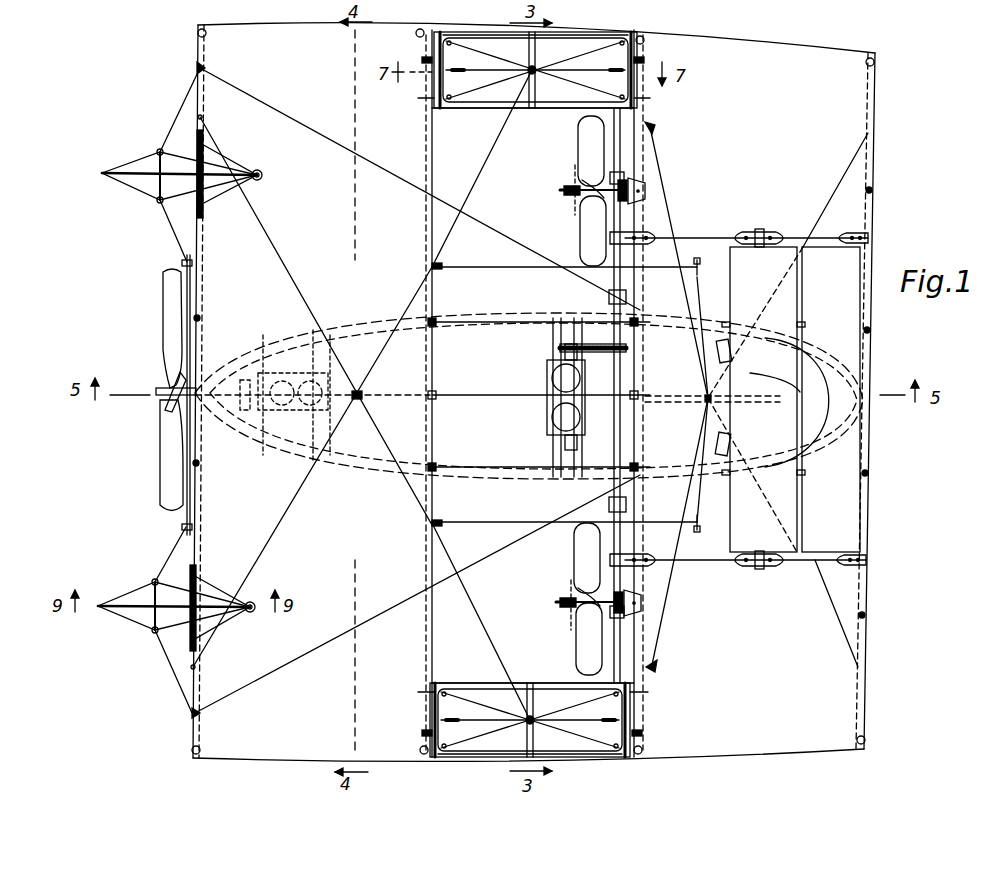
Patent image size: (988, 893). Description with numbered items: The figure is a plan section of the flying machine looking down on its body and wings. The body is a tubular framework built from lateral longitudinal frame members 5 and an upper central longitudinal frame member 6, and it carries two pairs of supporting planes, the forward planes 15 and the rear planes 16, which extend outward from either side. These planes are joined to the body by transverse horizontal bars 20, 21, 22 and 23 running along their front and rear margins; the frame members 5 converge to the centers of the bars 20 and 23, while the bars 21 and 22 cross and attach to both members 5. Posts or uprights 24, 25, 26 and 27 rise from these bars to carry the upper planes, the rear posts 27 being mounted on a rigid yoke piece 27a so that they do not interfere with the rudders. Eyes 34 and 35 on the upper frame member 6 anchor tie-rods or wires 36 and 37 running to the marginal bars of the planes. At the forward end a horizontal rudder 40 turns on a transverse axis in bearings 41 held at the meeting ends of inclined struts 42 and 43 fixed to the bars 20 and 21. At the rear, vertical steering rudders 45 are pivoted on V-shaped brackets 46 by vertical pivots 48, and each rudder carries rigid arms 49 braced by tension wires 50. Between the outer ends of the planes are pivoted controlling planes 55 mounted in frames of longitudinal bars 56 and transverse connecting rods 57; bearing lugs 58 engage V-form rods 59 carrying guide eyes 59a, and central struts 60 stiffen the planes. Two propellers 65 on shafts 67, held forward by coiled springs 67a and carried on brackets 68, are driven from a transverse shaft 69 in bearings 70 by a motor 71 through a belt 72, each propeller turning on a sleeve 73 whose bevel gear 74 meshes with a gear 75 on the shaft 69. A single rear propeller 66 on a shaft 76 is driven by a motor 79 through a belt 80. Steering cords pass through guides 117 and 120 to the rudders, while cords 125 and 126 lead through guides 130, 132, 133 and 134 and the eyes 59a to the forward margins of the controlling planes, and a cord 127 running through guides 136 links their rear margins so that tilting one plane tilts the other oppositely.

The longitudinal frame members 5 is at (505, 322).
The upper central longitudinal frame member 6 is at (535, 397).
The forward supporting planes 15 is at (534, 392).
The rear supporting planes 16 is at (262, 391).
The transverse bar 20 is at (872, 226).
The transverse bar 21 is at (650, 222).
The transverse bar 22 is at (426, 228).
The transverse bar 23 is at (200, 237).
The post 24 is at (872, 58).
The post 25 is at (641, 36).
The post 26 is at (420, 30).
The post 27 is at (197, 33).
The yoke piece 27a is at (205, 145).
The eye 34 is at (705, 395).
The eye 35 is at (360, 393).
The tie-rods 36 is at (720, 420).
The tie-rods 37 is at (362, 463).
The horizontal rudder 40 is at (797, 492).
The bearings 41 is at (760, 232).
The inclined strut 42 is at (828, 238).
The inclined strut 43 is at (720, 232).
The vertical steering rudders 45 is at (130, 178).
The bracket 46 is at (240, 170).
The vertical pivots 48 is at (263, 175).
The rigid arms 49 is at (157, 192).
The tension wires 50 is at (128, 170).
The controlling planes 55 is at (495, 104).
The longitudinal frame bars 56 is at (486, 32).
The transverse connecting rods 57 is at (440, 78).
The bearing lugs 58 is at (536, 684).
The V-form rods 59 is at (533, 394).
The guide eyes 59a is at (528, 67).
The struts 60 is at (533, 411).
The propellers 65 is at (582, 150).
The rear propeller 66 is at (165, 318).
The propeller shafts 67 is at (622, 178).
The coiled spring 67a is at (565, 210).
The brackets 68 is at (646, 188).
The transverse shaft 69 is at (640, 466).
The bearings 70 is at (625, 285).
The motor 71 is at (548, 376).
The driving belt 72 is at (630, 350).
The sleeve 73 is at (600, 193).
The beveled gear 74 is at (568, 192).
The beveled gear 75 is at (636, 204).
The propeller shaft 76 is at (165, 400).
The motor 79 is at (288, 372).
The driving belt 80 is at (241, 380).
The guides 117 is at (197, 66).
The guide 120 is at (198, 218).
The cord 125 is at (618, 68).
The cord 126 is at (478, 588).
The cord 127 is at (432, 60).
The fixed guide 130 is at (705, 265).
The fixed guide 132 is at (436, 270).
The guide 133 is at (700, 525).
The guide 134 is at (432, 524).
The guides 136 is at (655, 132).